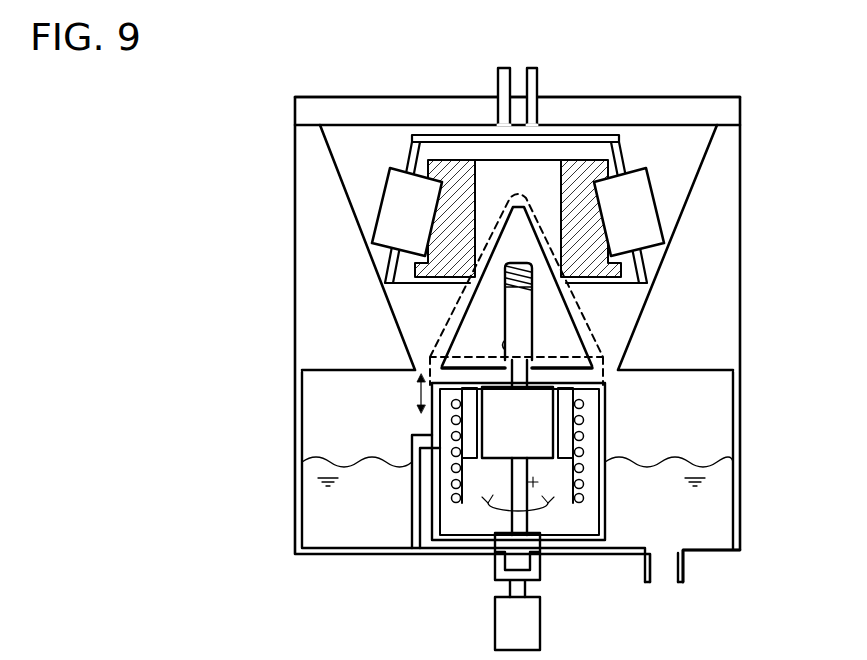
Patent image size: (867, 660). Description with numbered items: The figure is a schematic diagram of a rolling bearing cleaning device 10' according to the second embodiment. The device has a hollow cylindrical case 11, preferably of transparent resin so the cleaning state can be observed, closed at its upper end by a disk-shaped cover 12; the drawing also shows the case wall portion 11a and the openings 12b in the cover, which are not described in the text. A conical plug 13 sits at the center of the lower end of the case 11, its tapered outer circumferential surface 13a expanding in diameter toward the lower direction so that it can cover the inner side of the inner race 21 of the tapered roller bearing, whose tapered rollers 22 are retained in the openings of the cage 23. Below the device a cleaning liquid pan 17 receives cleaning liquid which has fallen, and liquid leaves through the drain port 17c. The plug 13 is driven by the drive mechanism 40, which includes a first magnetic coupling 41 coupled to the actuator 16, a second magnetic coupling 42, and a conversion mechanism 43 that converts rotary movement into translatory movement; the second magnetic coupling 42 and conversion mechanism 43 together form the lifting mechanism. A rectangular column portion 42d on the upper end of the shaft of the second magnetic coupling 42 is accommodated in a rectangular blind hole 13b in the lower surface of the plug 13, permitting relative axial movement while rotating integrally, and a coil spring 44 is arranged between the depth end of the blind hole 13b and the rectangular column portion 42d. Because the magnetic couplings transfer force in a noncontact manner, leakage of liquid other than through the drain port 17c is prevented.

The rolling bearing cleaning device 10' is at (496, 294).
The case 11 is at (313, 277).
The inclined funnel portion 11a is at (646, 300).
The cover 12 is at (740, 97).
The inlet pipes 12b is at (537, 87).
The plug 13 is at (518, 197).
The tapered outer circumferential surface 13a is at (603, 352).
The blind hole 13b is at (503, 350).
The actuator 16 is at (540, 622).
The cleaning liquid pan 17 is at (744, 554).
The drain port 17c is at (684, 584).
The inner race 21 is at (438, 160).
The tapered rollers 22 is at (400, 205).
The cage 23 is at (412, 135).
The drive mechanism 40 is at (608, 421).
The first magnetic coupling 41 is at (494, 565).
The second magnetic coupling 42 is at (549, 463).
The rectangular column portion 42d is at (512, 311).
The conversion mechanism 43 is at (420, 434).
The coil spring 44 is at (533, 282).